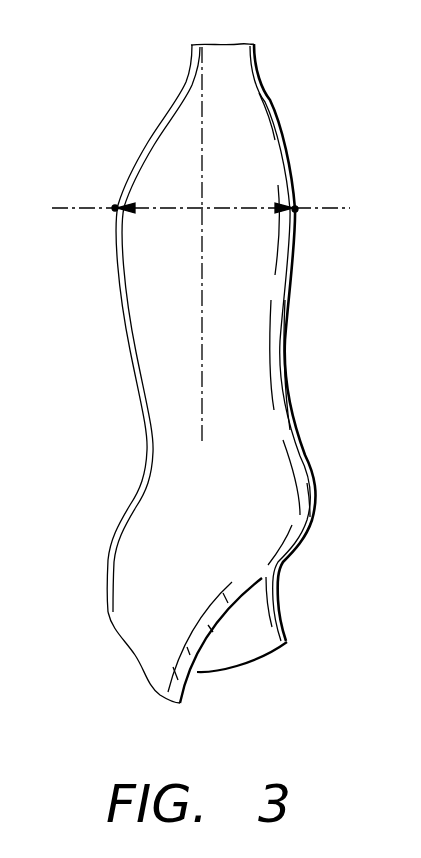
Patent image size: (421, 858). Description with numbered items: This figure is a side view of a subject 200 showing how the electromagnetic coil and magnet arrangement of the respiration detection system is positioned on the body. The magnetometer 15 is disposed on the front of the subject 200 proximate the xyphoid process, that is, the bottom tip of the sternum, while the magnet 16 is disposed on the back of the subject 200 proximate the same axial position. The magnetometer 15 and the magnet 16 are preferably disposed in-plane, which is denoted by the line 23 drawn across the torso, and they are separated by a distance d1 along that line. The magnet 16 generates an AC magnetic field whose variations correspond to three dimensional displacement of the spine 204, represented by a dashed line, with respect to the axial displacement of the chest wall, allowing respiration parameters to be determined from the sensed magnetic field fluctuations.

The subject 200 is at (272, 100).
The in-plane line 23 is at (203, 205).
The width dimension d1 is at (148, 211).
The magnetometer 15 is at (115, 206).
The magnet 16 is at (296, 209).
The spine 204 is at (203, 342).